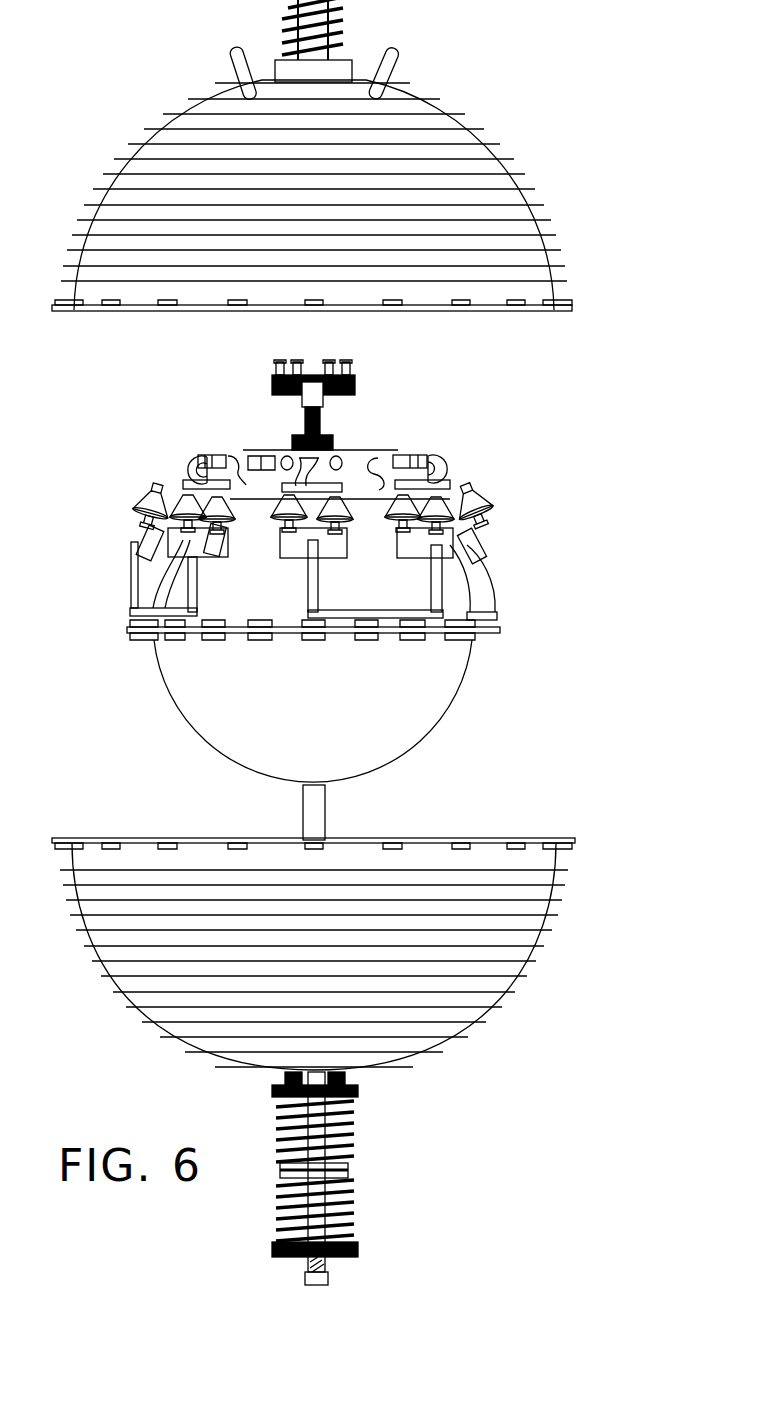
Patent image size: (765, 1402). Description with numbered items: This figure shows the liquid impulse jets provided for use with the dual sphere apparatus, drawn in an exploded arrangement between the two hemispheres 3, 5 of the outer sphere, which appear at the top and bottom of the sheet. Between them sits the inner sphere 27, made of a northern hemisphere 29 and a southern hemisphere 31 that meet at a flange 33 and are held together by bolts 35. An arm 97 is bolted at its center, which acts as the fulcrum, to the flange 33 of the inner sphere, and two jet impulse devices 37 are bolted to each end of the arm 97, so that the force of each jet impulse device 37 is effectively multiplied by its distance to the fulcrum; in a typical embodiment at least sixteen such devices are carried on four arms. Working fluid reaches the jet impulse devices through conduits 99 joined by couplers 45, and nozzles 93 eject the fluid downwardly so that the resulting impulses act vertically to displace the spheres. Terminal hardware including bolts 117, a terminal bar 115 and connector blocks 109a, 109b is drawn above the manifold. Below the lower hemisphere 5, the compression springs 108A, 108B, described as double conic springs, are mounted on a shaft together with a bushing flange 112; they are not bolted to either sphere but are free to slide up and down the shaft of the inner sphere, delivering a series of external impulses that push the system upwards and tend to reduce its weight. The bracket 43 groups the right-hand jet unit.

The hemisphere of outer sphere 3 is at (492, 40).
The hemisphere of outer sphere 5 is at (598, 828).
The inner sphere 27 is at (520, 787).
The northern hemisphere 29 is at (157, 452).
The southern hemisphere 31 is at (187, 800).
The flange 33 is at (498, 623).
The bolts 35 is at (455, 640).
The jet impulse device 37 is at (447, 545).
The right sensor unit 43 is at (446, 458).
The couplers 45 is at (243, 450).
The nozzles 93 is at (480, 518).
The arm 97 is at (127, 613).
The conduits 99 is at (440, 455).
The upper connector block 109a is at (327, 407).
The lower connector block 109b is at (333, 435).
The bolt bushing flange 112 is at (278, 1125).
The terminal bar 115 is at (357, 383).
The terminal bolts 117 is at (347, 359).
The compression spring 108A is at (355, 1125).
The compression spring 108B is at (353, 1207).